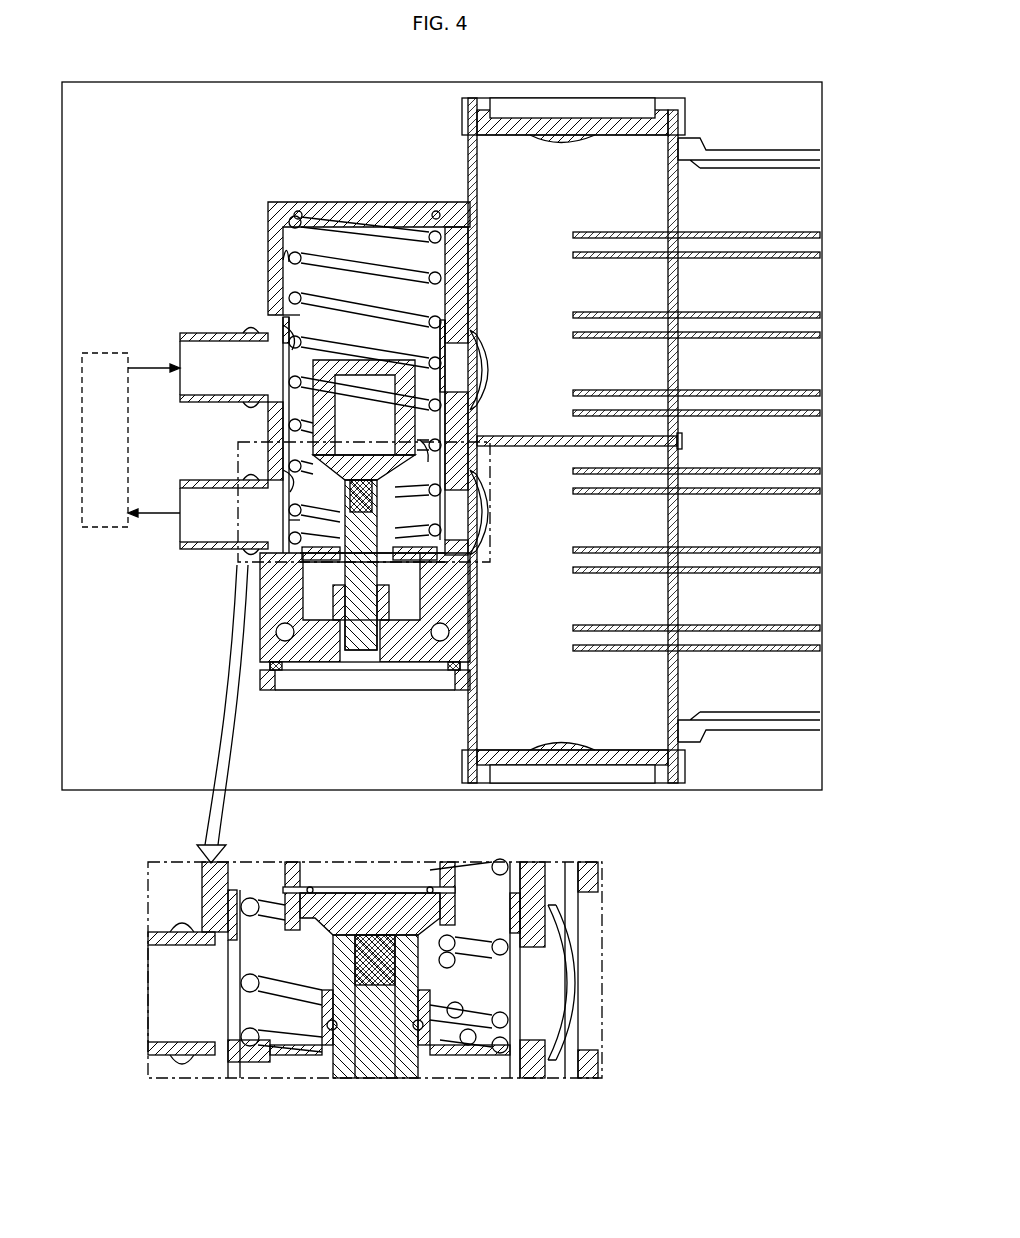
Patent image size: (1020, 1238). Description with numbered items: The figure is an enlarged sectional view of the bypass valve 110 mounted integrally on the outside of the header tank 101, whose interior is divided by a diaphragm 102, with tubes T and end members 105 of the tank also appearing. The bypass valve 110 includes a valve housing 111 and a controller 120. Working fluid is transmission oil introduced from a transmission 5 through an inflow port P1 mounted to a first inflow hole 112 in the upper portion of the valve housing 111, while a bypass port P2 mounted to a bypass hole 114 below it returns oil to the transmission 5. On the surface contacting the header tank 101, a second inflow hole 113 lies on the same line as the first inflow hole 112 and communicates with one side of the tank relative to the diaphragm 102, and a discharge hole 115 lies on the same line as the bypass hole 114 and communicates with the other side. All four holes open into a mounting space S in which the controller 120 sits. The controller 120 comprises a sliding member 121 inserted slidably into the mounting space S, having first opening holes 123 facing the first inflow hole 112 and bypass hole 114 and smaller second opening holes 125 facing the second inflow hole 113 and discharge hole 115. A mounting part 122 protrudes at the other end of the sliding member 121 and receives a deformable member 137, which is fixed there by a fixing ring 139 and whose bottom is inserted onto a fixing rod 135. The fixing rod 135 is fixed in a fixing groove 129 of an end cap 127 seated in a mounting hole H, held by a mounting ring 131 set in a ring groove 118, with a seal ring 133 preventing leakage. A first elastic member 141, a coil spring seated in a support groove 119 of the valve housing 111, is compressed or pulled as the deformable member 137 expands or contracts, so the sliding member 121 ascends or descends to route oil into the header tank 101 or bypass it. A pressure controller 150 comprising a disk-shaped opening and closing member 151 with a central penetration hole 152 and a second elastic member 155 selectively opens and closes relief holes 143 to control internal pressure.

The transmission 5 is at (90, 352).
The header tank 101 is at (690, 140).
The diaphragm 102 is at (522, 436).
The tank connecting tube 105 is at (776, 150).
The bypass valve 110 is at (374, 183).
The valve housing 111 is at (283, 200).
The first inflow hole 112 is at (272, 342).
The second inflow hole 113 is at (472, 370).
The bypass hole 114 is at (271, 494).
The discharge hole 115 is at (471, 508).
The ring groove 118 is at (456, 648).
The support groove 119 is at (438, 208).
The controller 120 is at (294, 290).
The sliding member 121 is at (345, 320).
The mounting part 122 is at (292, 530).
The first opening hole 123 is at (288, 338).
The second opening hole 125 is at (442, 462).
The end cap 127 is at (343, 640).
The fixing groove 129 is at (356, 652).
The mounting ring 131 is at (290, 672).
The seal ring 133 is at (458, 628).
The fixing rod 135 is at (386, 640).
The deformable member 137 is at (300, 400).
The fixing ring 139 is at (290, 518).
The first elastic member 141 is at (286, 262).
The relief hole 143 is at (430, 662).
The pressure controller 150 is at (538, 548).
The opening and closing member 151 is at (455, 592).
The penetration hole 152 is at (275, 640).
The second elastic member 155 is at (442, 562).
The inflow port P1 is at (180, 334).
The bypass port P2 is at (180, 543).
The mounting space S is at (448, 262).
The heat exchange tubes T is at (573, 322).
The mounting hole H is at (308, 715).